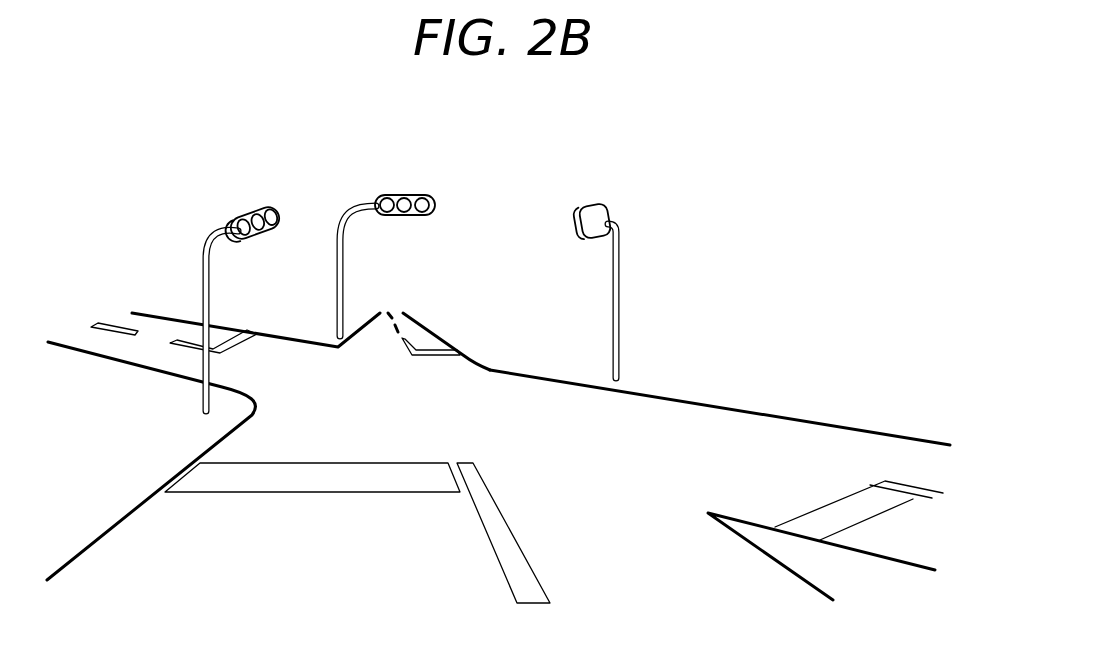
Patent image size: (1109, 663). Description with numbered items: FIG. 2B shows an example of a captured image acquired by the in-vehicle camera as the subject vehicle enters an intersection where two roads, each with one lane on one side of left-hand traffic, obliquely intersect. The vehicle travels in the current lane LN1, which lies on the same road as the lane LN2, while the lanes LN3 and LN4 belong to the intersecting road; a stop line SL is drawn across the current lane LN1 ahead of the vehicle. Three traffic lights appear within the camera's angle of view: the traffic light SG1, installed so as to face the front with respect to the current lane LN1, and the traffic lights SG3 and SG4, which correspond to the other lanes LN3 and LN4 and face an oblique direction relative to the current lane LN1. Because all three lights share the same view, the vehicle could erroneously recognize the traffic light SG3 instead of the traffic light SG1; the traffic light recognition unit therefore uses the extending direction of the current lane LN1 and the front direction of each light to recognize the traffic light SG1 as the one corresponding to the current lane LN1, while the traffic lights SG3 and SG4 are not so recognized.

The traffic light SG1 is at (418, 193).
The traffic light SG3 is at (255, 212).
The traffic light SG4 is at (596, 203).
The lane LN1 is at (232, 452).
The lane LN2 is at (427, 340).
The lane LN3 is at (910, 538).
The lane LN4 is at (180, 332).
The stop line SL is at (200, 480).